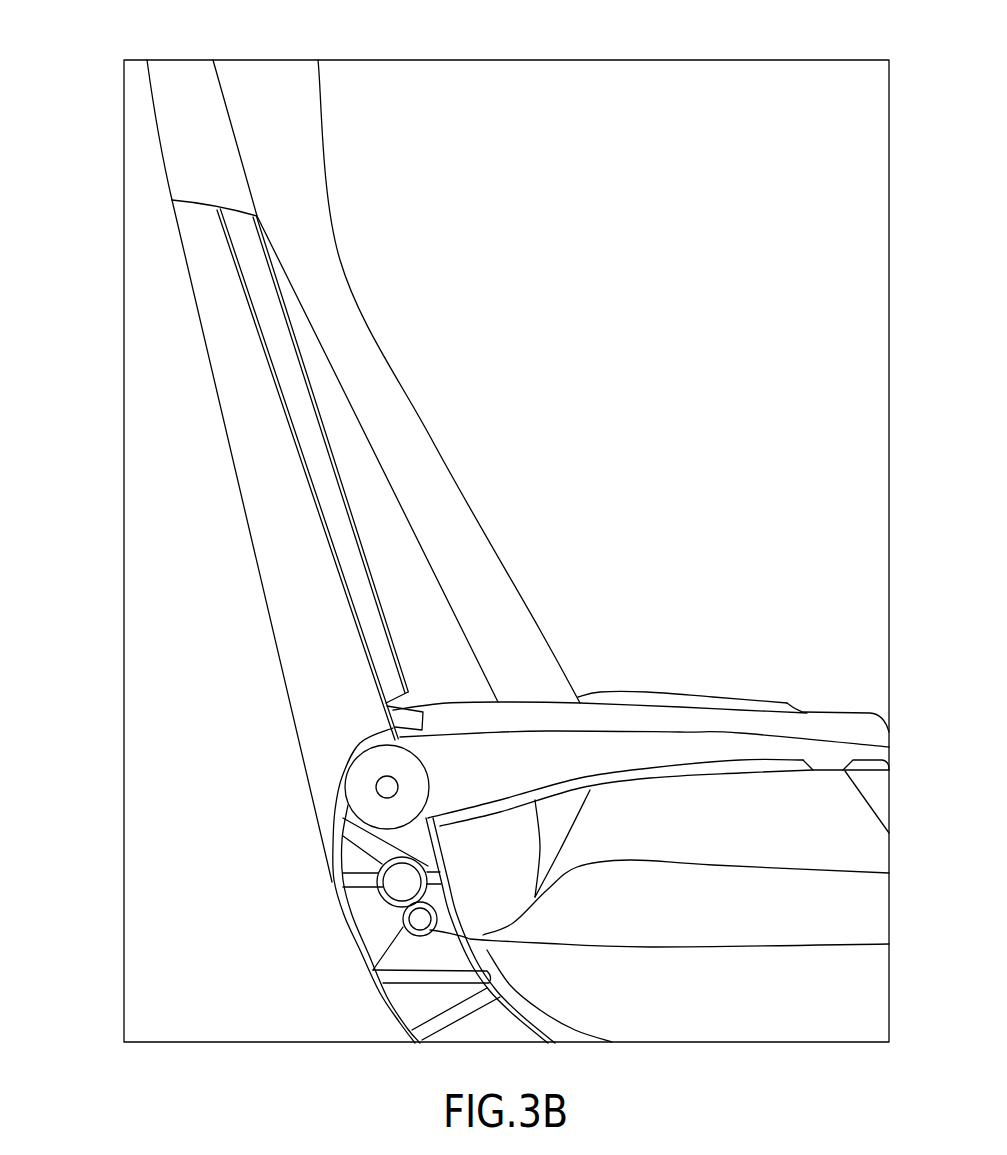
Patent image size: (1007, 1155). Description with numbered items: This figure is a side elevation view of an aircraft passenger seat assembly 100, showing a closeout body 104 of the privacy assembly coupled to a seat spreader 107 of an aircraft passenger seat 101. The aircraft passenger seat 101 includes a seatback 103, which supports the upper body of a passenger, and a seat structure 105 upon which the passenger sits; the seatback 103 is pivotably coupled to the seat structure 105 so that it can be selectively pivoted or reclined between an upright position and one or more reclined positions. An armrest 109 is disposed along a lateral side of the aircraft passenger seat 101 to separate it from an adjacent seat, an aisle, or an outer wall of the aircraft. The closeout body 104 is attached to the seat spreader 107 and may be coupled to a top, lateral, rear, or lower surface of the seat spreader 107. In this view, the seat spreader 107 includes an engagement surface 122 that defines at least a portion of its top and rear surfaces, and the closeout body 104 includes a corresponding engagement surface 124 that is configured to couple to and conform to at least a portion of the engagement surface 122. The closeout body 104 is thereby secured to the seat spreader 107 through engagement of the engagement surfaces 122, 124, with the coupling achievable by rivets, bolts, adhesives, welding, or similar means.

The aircraft passenger seat assembly 100 is at (112, 47).
The aircraft passenger seat 101 is at (97, 156).
The seatback 103 is at (343, 267).
The closeout body 104 is at (228, 353).
The seat structure 105 is at (853, 905).
The seat spreader 107 is at (355, 938).
The armrest 109 is at (645, 717).
The engagement surface 122 is at (345, 890).
The engagement surface 124 is at (330, 843).